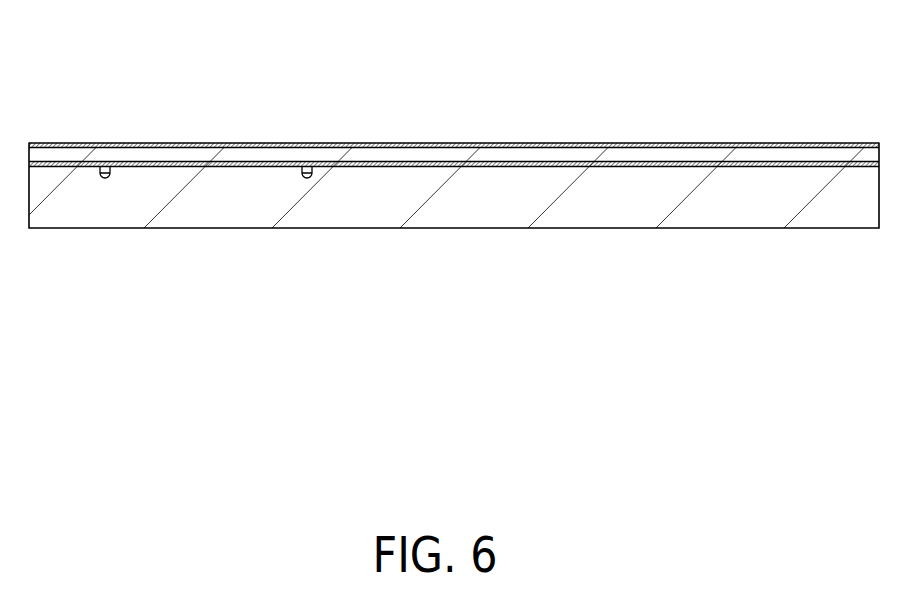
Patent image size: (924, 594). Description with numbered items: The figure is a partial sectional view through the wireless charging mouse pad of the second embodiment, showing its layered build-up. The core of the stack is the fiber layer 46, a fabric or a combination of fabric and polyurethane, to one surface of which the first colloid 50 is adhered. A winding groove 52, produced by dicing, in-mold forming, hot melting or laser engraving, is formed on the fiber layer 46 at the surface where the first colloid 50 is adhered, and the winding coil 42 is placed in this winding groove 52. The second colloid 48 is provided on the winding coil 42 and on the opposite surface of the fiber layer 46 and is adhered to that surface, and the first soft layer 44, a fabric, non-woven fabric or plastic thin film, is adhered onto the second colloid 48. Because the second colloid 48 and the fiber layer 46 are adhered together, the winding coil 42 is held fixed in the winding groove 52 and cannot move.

The winding coil 42 is at (311, 170).
The first soft layer 44 is at (721, 142).
The fiber layer 46 is at (752, 167).
The second colloid 48 is at (430, 155).
The first colloid 50 is at (510, 203).
The winding groove 52 is at (312, 180).